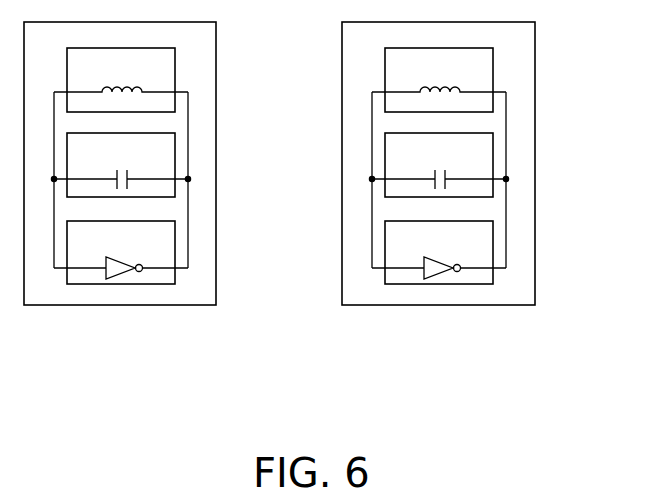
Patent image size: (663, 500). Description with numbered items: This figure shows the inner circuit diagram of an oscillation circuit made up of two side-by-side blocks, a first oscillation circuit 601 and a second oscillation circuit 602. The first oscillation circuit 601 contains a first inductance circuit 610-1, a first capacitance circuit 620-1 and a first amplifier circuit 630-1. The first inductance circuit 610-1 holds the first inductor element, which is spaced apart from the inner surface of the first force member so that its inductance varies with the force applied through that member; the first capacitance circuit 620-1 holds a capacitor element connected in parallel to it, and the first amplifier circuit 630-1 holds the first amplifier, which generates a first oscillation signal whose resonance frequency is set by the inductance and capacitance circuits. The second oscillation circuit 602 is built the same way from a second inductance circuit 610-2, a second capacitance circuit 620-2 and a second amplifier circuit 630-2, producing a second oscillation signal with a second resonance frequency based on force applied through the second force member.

The first oscillation circuit 601 is at (164, 212).
The second oscillation circuit 602 is at (483, 212).
The first inductance circuit 610-1 is at (175, 66).
The first capacitance circuit 620-1 is at (175, 150).
The first amplifier circuit 630-1 is at (175, 238).
The second inductance circuit 610-2 is at (493, 66).
The second capacitance circuit 620-2 is at (493, 150).
The second amplifier circuit 630-2 is at (493, 238).